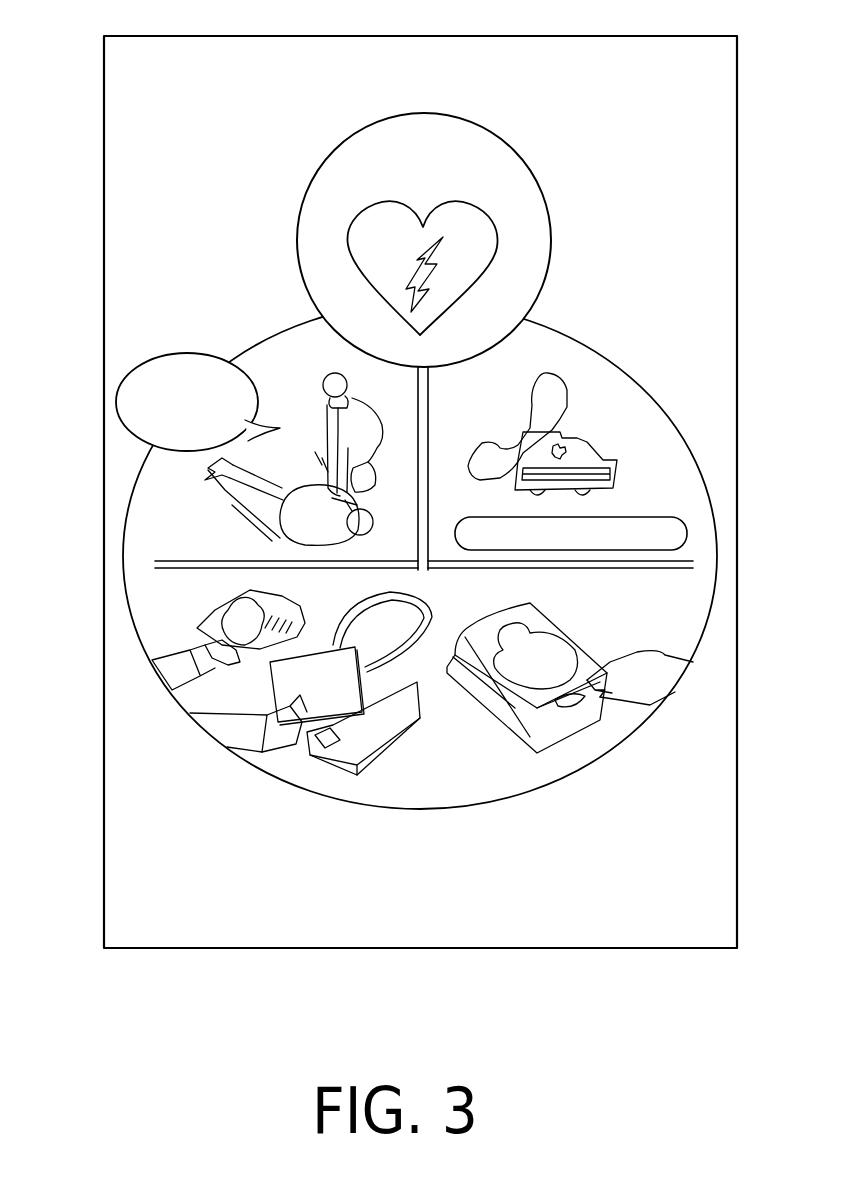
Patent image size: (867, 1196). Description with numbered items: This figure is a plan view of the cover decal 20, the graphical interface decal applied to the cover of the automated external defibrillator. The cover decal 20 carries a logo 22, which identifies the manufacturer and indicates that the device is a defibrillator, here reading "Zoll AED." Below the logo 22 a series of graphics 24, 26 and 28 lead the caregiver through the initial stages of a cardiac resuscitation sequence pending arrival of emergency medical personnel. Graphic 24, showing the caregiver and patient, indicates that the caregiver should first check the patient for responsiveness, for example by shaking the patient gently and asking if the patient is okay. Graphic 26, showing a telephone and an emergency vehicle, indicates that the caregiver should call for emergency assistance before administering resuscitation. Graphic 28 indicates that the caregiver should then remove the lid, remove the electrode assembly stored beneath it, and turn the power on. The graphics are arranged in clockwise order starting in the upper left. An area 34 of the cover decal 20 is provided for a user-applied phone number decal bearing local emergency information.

The cover decal 20 is at (680, 244).
The logo 22 is at (545, 203).
The graphic 24 is at (155, 494).
The graphic 26 is at (648, 425).
The graphic 28 is at (443, 783).
The area 34 is at (655, 528).